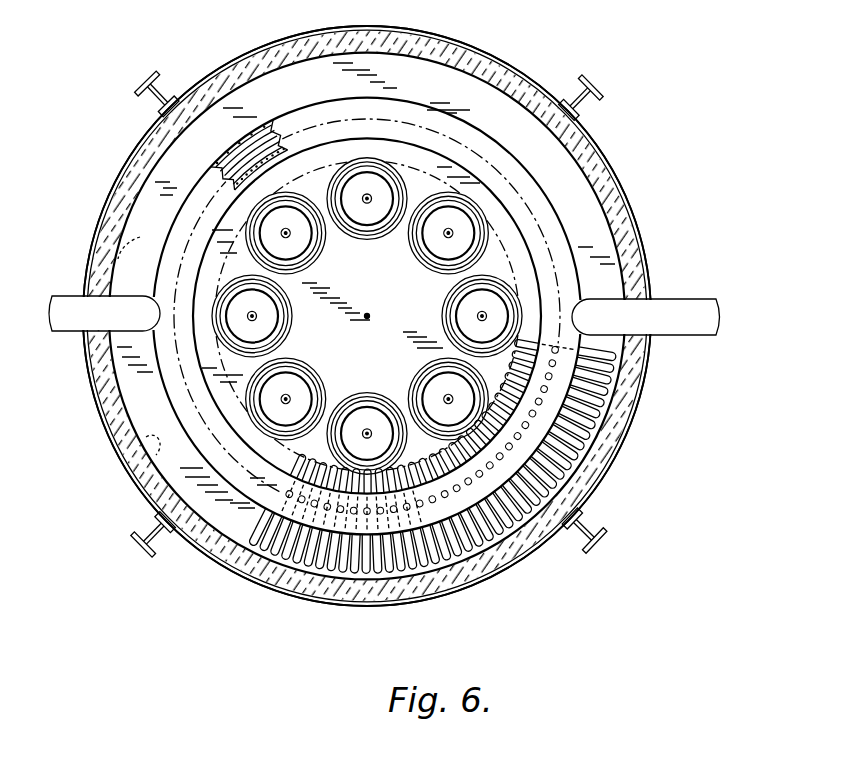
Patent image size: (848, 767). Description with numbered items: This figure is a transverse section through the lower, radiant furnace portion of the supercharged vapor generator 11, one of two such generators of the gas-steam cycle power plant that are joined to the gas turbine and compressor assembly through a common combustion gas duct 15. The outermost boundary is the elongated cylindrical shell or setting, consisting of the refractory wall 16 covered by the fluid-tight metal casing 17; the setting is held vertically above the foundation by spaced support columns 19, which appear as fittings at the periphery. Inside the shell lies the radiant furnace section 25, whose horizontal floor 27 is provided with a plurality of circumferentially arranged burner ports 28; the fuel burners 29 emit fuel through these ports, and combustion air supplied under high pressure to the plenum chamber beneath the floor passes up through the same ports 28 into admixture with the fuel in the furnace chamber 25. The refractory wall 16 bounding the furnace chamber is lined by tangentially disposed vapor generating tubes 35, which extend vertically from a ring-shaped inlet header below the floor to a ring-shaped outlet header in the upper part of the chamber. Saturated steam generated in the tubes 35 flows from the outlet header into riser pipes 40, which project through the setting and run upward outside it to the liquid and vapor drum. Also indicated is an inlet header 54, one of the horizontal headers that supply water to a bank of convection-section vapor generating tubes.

The supercharged vapor generator 11 is at (680, 103).
The common combustion gas duct 15 is at (180, 250).
The refractory wall 16 is at (625, 208).
The fluid-tight metal casing 17 is at (643, 242).
The support columns 19 is at (140, 84).
The radiant furnace section 25 is at (371, 299).
The horizontal floor 27 is at (600, 279).
The burner ports 28 is at (450, 296).
The fuel burners 29 is at (287, 397).
The vapor generating tubes 35 is at (590, 440).
The riser pipes 40 is at (514, 159).
The inlet header 54 is at (697, 307).